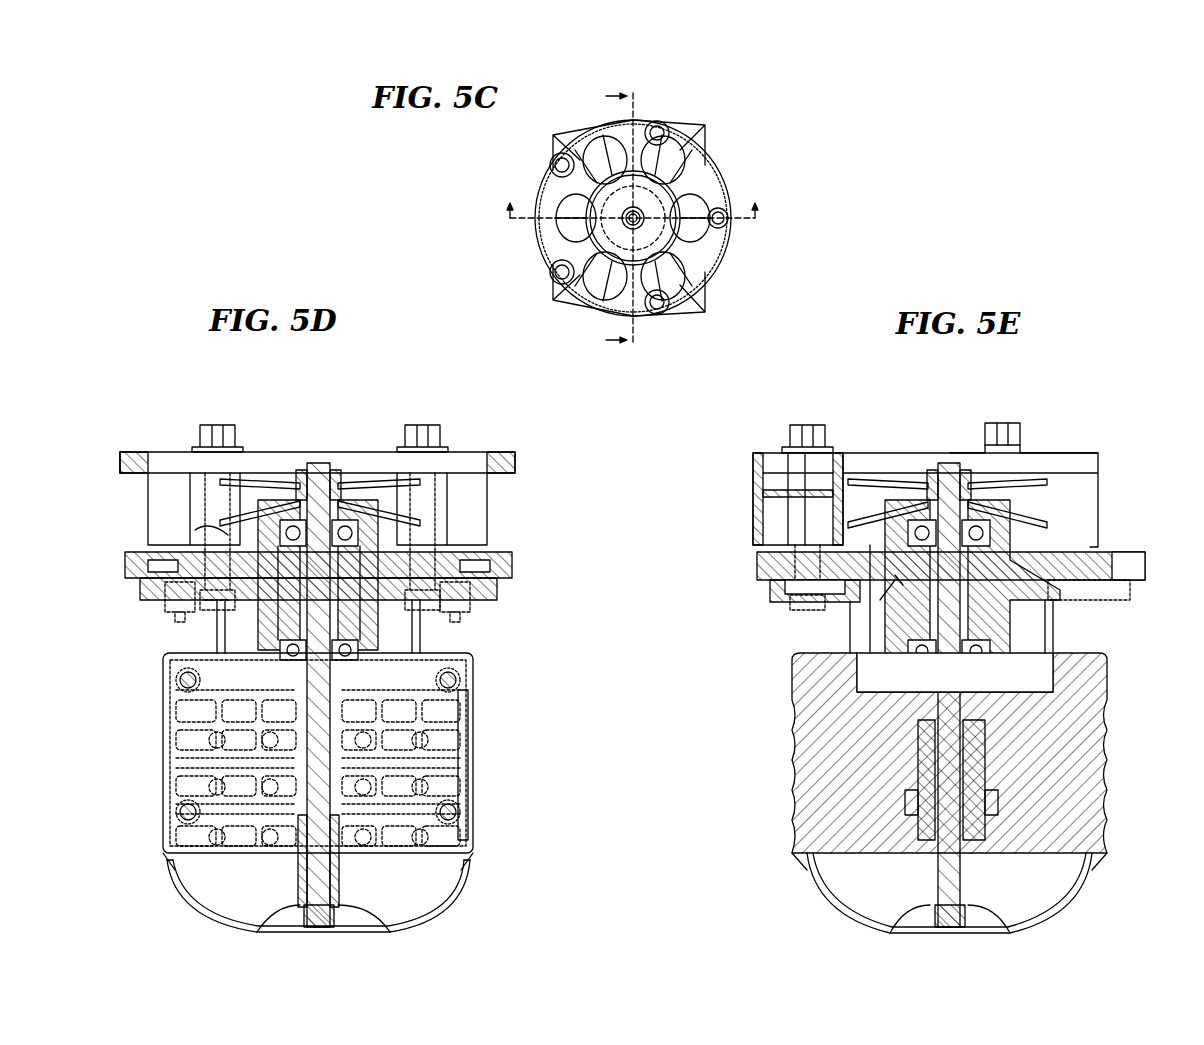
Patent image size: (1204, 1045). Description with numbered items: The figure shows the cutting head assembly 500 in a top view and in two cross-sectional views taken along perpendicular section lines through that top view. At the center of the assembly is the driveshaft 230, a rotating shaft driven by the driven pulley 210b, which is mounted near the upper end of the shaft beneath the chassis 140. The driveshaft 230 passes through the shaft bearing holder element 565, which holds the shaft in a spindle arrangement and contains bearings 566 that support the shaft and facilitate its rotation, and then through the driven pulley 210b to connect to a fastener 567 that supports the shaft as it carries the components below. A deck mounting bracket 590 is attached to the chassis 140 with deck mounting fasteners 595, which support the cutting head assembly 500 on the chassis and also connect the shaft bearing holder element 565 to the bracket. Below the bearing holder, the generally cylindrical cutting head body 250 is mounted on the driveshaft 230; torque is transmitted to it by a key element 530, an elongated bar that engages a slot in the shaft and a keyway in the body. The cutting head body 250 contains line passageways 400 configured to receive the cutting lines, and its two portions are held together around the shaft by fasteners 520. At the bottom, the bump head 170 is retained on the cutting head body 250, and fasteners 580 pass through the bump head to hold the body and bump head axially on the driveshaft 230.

In FIG. 5C, the cutting head assembly 500 is at (740, 135).
In FIG. 5D, the cutting head assembly 500 is at (62, 412).
In FIG. 5E, the cutting head assembly 500 is at (1112, 400).
In FIG. 5D, the chassis 140 is at (275, 452).
In FIG. 5E, the chassis 140 is at (1100, 458).
In FIG. 5D, the bump head 170 is at (225, 928).
In FIG. 5E, the bump head 170 is at (1040, 930).
In FIG. 5D, the driven pulley 210b is at (420, 480).
In FIG. 5E, the driven pulley 210b is at (1047, 515).
In FIG. 5D, the driveshaft 230 is at (470, 675).
In FIG. 5E, the driveshaft 230 is at (1010, 675).
In FIG. 5D, the cutting head body 250 is at (160, 860).
In FIG. 5E, the cutting head body 250 is at (805, 858).
In FIG. 5D, the line passageways 400 is at (270, 835).
In FIG. 5D, the fasteners 520 is at (180, 688).
In FIG. 5E, the key element 530 is at (985, 805).
In FIG. 5D, the shaft bearing holder element 565 is at (210, 655).
In FIG. 5E, the shaft bearing holder element 565 is at (800, 600).
In FIG. 5D, the bearings 566 is at (275, 525).
In FIG. 5D, the fastener 567 is at (332, 470).
In FIG. 5E, the fastener 567 is at (1010, 478).
In FIG. 5D, the fasteners 580 is at (318, 927).
In FIG. 5E, the fasteners 580 is at (940, 930).
In FIG. 5D, the deck mounting bracket 590 is at (225, 423).
In FIG. 5E, the deck mounting bracket 590 is at (835, 425).
In FIG. 5D, the deck mounting fasteners 595 is at (120, 452).
In FIG. 5E, the deck mounting fasteners 595 is at (753, 460).